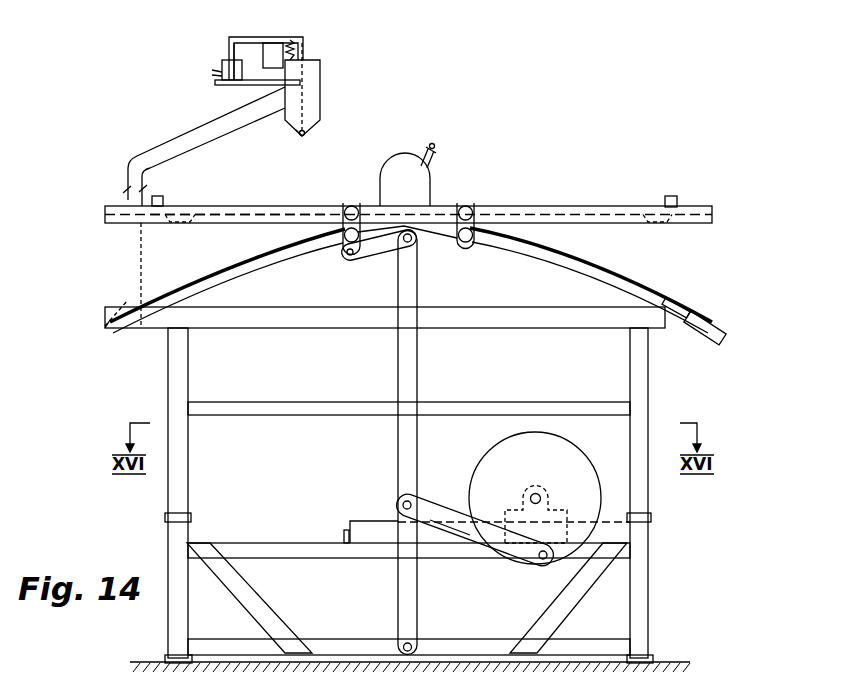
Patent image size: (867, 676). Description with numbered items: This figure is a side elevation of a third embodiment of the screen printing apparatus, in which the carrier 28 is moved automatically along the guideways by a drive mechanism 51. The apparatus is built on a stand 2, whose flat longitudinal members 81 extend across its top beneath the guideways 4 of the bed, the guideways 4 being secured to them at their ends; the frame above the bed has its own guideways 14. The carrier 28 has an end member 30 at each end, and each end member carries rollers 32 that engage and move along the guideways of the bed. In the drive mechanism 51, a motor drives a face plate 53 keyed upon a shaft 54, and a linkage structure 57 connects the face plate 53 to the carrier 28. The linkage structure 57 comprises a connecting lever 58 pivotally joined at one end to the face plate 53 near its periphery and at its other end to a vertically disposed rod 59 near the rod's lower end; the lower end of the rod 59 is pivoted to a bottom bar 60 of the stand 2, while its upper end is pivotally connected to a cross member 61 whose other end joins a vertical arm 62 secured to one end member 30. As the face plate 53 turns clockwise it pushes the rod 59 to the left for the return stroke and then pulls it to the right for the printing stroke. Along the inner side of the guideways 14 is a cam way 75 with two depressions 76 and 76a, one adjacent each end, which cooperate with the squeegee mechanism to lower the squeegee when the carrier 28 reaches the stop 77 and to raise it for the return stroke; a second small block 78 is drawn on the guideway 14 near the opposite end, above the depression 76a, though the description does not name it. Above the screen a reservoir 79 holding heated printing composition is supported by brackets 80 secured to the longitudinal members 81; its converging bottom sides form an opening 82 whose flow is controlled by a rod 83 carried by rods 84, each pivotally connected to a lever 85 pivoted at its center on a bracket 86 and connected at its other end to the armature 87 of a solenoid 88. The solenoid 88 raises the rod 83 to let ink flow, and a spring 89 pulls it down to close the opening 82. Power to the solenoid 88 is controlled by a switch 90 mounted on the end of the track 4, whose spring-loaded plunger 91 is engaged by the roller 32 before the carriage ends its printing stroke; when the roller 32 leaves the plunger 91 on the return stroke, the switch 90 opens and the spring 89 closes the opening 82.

The stand 2 is at (648, 372).
The guideways or tracks 4 is at (556, 258).
The guideways or tracks 14 is at (105, 213).
The carrier 28 is at (401, 152).
The end member 30 is at (381, 176).
The rollers 32 is at (463, 243).
The drive mechanism 51 is at (614, 442).
The face plate 53 is at (591, 478).
The shaft 54 is at (538, 494).
The linkage structure 57 is at (454, 494).
The connecting lever 58 is at (470, 545).
The rod 59 is at (418, 608).
The bottom bar 60 is at (595, 645).
The cross member 61 is at (362, 250).
The vertical arm 62 is at (343, 210).
The cam way 75 is at (242, 212).
The depression 76 is at (192, 224).
The depression 76a is at (660, 224).
The stop 77 is at (167, 192).
The stop 78 is at (677, 200).
The reservoir 79 is at (320, 72).
The bracket 80 is at (180, 135).
The flat longitudinal member 81 is at (198, 329).
The opening 82 is at (305, 136).
The rod 83 is at (299, 134).
The rod 84 is at (306, 80).
The lever 85 is at (243, 38).
The bracket 86 is at (261, 55).
The armature 87 is at (229, 50).
The solenoid 88 is at (222, 65).
The spring 89 is at (290, 40).
The switch 90 is at (726, 332).
The spring-loaded plunger 91 is at (680, 302).